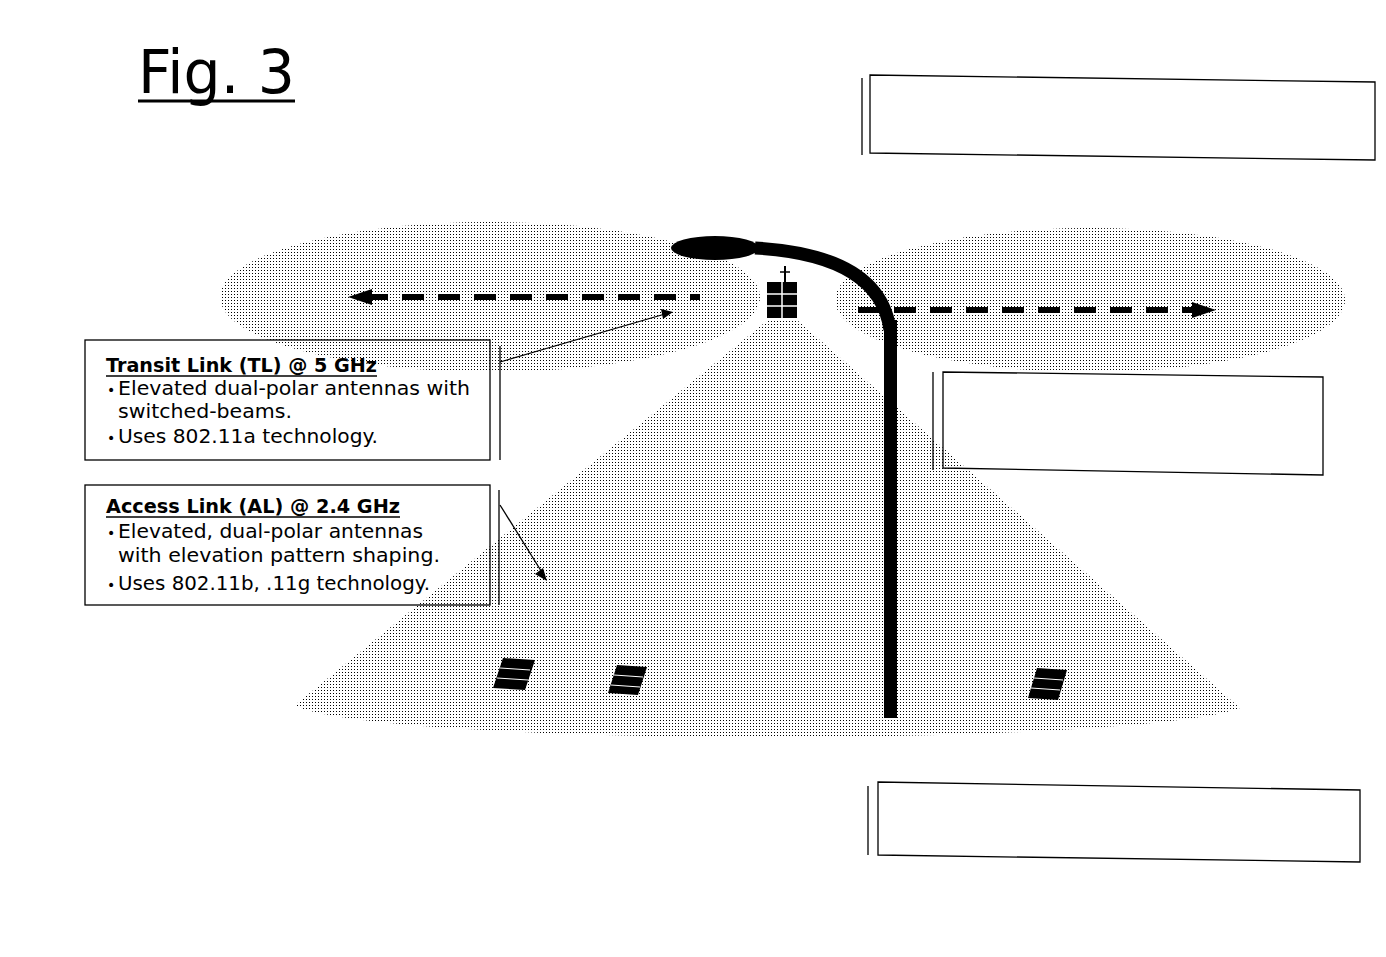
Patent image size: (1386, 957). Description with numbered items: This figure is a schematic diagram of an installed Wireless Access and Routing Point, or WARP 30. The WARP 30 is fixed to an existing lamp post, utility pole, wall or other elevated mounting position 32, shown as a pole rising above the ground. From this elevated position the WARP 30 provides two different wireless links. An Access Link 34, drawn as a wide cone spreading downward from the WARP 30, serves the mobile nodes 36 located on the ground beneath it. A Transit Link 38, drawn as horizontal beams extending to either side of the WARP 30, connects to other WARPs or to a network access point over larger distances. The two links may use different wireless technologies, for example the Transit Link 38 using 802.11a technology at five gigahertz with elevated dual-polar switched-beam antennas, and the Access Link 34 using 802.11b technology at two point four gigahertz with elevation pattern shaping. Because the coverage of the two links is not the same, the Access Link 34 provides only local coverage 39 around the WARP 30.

The Wireless Access and Routing Point (WARP) 30 is at (798, 270).
The elevated mounting position 32 is at (905, 350).
The Access Link 34 is at (767, 528).
The mobile nodes (MNs) 36 is at (797, 704).
The Transit Link 38 is at (782, 297).
The local coverage 39 is at (791, 708).